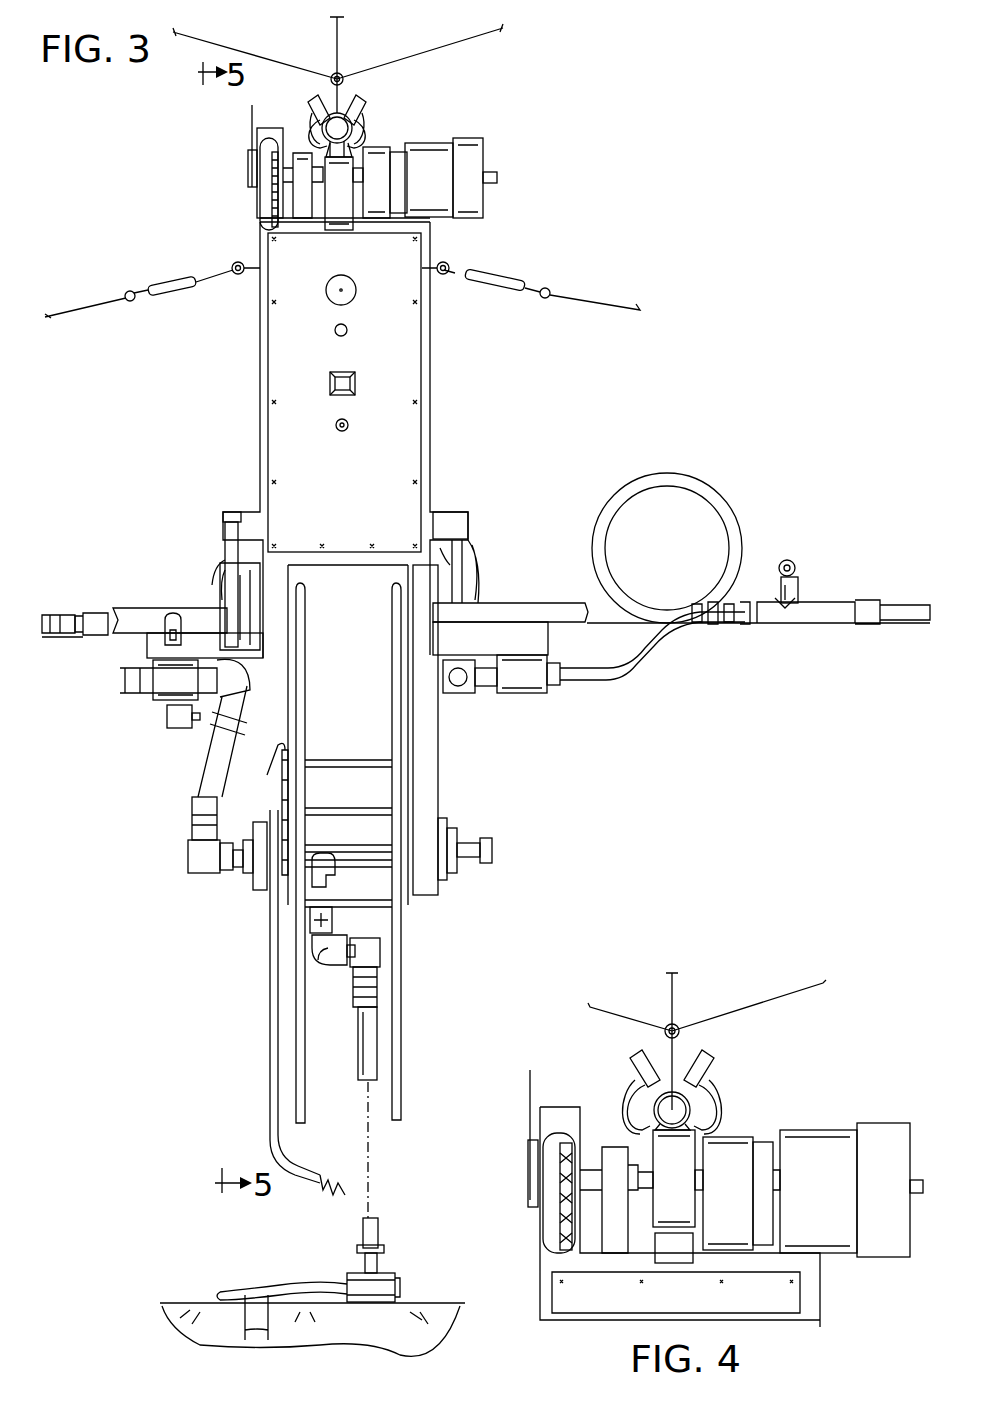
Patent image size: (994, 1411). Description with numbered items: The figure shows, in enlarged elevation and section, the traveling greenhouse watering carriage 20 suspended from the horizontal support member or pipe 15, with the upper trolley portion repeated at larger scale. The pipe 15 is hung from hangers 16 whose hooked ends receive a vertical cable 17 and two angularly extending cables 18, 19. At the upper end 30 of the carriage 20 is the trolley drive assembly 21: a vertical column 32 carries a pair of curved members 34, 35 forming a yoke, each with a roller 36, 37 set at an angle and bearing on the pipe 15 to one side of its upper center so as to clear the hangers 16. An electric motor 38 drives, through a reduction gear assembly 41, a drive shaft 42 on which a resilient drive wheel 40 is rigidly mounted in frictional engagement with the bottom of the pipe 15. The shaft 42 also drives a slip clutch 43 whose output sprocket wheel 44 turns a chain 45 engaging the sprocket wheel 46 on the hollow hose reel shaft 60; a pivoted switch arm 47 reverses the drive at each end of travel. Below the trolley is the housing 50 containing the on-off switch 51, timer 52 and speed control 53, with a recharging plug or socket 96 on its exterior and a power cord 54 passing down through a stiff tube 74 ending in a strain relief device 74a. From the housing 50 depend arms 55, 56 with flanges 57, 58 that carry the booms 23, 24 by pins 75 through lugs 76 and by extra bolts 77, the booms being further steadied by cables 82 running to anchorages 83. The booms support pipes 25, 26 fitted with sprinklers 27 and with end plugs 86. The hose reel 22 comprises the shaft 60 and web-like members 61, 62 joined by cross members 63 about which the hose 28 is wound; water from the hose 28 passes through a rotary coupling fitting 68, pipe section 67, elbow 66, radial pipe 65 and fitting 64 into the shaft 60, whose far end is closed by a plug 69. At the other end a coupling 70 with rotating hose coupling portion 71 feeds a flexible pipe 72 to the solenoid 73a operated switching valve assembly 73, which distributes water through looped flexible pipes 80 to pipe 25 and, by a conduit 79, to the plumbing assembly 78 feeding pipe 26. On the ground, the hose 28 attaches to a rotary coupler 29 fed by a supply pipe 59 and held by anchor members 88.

In FIG. 3, the horizontal support member 15 is at (322, 135).
In FIG. 4, the horizontal support member 15 is at (718, 1118).
In FIG. 3, the hanger 16 is at (341, 74).
In FIG. 4, the hanger 16 is at (678, 1024).
In FIG. 3, the vertical cable 17 is at (334, 40).
In FIG. 4, the vertical cable 17 is at (674, 992).
In FIG. 3, the angularly extending cable 18 is at (280, 60).
In FIG. 4, the angularly extending cable 18 is at (628, 1012).
In FIG. 3, the angularly extending cable 19 is at (392, 52).
In FIG. 4, the angularly extending cable 19 is at (768, 995).
In FIG. 3, the carriage 20 is at (226, 474).
In FIG. 3, the trolley drive assembly 21 is at (436, 122).
In FIG. 4, the trolley drive assembly 21 is at (790, 1085).
In FIG. 3, the hose reel 22 is at (420, 997).
In FIG. 3, the boom 23 is at (90, 613).
In FIG. 3, the boom 24 is at (562, 603).
In FIG. 3, the pipe 25 is at (48, 615).
In FIG. 3, the pipe 26 is at (838, 625).
In FIG. 3, the sprinkler 27 is at (802, 582).
In FIG. 3, the hose 28 is at (363, 1040).
In FIG. 3, the rotary coupler 29 is at (378, 1285).
In FIG. 3, the upper end 30 is at (425, 225).
In FIG. 4, the upper end 30 is at (818, 1258).
In FIG. 3, the vertical column 32 is at (325, 236).
In FIG. 4, the vertical column 32 is at (685, 1263).
In FIG. 3, the curved member 34 is at (316, 120).
In FIG. 4, the curved member 34 is at (630, 1105).
In FIG. 3, the curved member 35 is at (362, 113).
In FIG. 4, the curved member 35 is at (722, 1092).
In FIG. 3, the roller 36 is at (308, 102).
In FIG. 4, the roller 36 is at (634, 1055).
In FIG. 3, the roller 37 is at (366, 102).
In FIG. 4, the roller 37 is at (710, 1050).
In FIG. 3, the electric motor 38 is at (470, 156).
In FIG. 4, the electric motor 38 is at (848, 1190).
In FIG. 3, the drive wheel 40 is at (355, 122).
In FIG. 4, the drive wheel 40 is at (655, 1150).
In FIG. 3, the reduction gear assembly 41 is at (380, 200).
In FIG. 4, the reduction gear assembly 41 is at (734, 1193).
In FIG. 3, the drive shaft 42 is at (342, 225).
In FIG. 4, the drive shaft 42 is at (700, 1190).
In FIG. 3, the slip clutch 43 is at (232, 163).
In FIG. 4, the slip clutch 43 is at (528, 1195).
In FIG. 3, the output sprocket wheel 44 is at (266, 182).
In FIG. 4, the output sprocket wheel 44 is at (558, 1190).
In FIG. 3, the chain 45 is at (272, 208).
In FIG. 4, the chain 45 is at (560, 1220).
In FIG. 3, the sprocket wheel 46 is at (258, 880).
In FIG. 3, the switch arm 47 is at (252, 118).
In FIG. 4, the switch arm 47 is at (530, 1075).
In FIG. 3, the housing 50 is at (446, 377).
In FIG. 3, the on-off switch 51 is at (348, 425).
In FIG. 3, the timer 52 is at (356, 290).
In FIG. 3, the speed control 53 is at (347, 330).
In FIG. 3, the power cord 54 is at (340, 1190).
In FIG. 3, the depending arm 55 is at (296, 722).
In FIG. 3, the depending arm 56 is at (430, 746).
In FIG. 3, the flange 57 is at (147, 645).
In FIG. 3, the flange 58 is at (548, 638).
In FIG. 3, the supply pipe 59 is at (232, 1292).
In FIG. 3, the hollow hose reel shaft 60 is at (383, 848).
In FIG. 3, the circular web-like member 61 is at (306, 1118).
In FIG. 3, the circular web-like member 62 is at (402, 1048).
In FIG. 3, the cross member 63 is at (330, 765).
In FIG. 3, the fitting 64 is at (336, 872).
In FIG. 3, the radial pipe 65 is at (332, 918).
In FIG. 3, the elbow 66 is at (325, 962).
In FIG. 3, the pipe section 67 is at (348, 958).
In FIG. 3, the rotary coupling fitting 68 is at (382, 960).
In FIG. 3, the plug 69 is at (492, 845).
In FIG. 3, the coupling 70 is at (200, 873).
In FIG. 3, the hose coupling portion 71 is at (227, 870).
In FIG. 3, the pipe 72 is at (208, 770).
In FIG. 3, the switching valve assembly 73 is at (160, 700).
In FIG. 3, the solenoid 73a is at (178, 728).
In FIG. 3, the stiff tube 74 is at (270, 1010).
In FIG. 3, the strain relief device 74a is at (322, 1192).
In FIG. 3, the bolt or pin 75 is at (222, 570).
In FIG. 3, the lug 76 is at (225, 518).
In FIG. 3, the bolt 77 is at (166, 614).
In FIG. 3, the plumbing assembly 78 is at (515, 693).
In FIG. 3, the conduit 79 is at (220, 584).
In FIG. 3, the flexible pipe 80 is at (120, 680).
In FIG. 3, the cable 82 is at (115, 305).
In FIG. 3, the anchorage 83 is at (240, 280).
In FIG. 3, the plug 86 is at (796, 563).
In FIG. 3, the anchor member 88 is at (270, 1325).
In FIG. 3, the plug or socket 96 is at (355, 386).